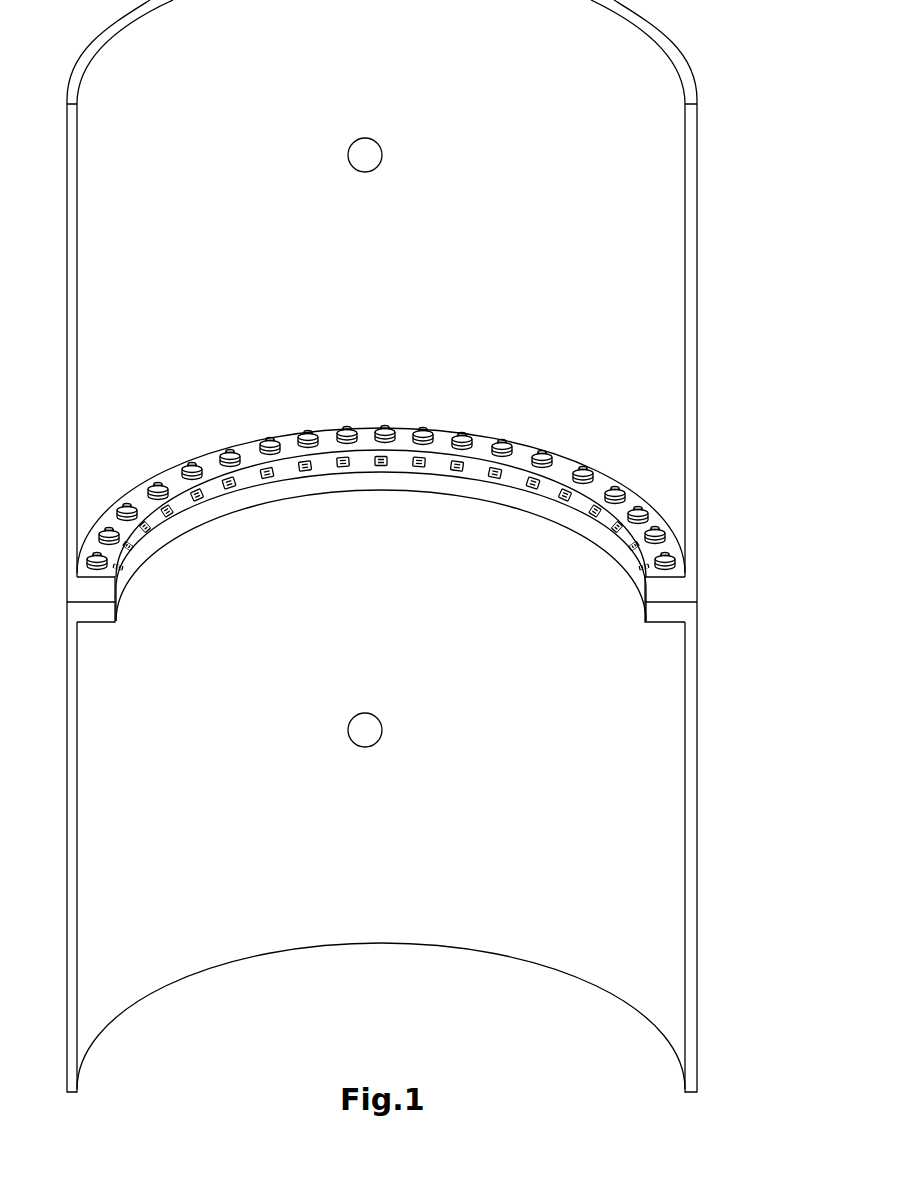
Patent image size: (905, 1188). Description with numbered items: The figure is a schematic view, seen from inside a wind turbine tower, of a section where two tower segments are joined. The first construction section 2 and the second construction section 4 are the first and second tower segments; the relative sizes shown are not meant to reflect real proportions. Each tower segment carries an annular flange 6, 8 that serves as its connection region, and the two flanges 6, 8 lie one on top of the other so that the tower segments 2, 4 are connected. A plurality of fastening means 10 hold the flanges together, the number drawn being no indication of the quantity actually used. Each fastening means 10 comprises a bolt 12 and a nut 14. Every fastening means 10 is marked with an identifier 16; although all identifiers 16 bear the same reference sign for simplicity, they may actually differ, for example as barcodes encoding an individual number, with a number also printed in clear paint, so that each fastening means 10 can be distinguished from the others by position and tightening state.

The first construction section 2 is at (365, 155).
The second construction section 4 is at (365, 730).
The annular flange 6 is at (673, 587).
The annular flange 8 is at (675, 612).
The fastening means 10 is at (420, 424).
The bolt 12 is at (507, 443).
The nut 14 is at (291, 438).
The identifier 16 is at (236, 481).